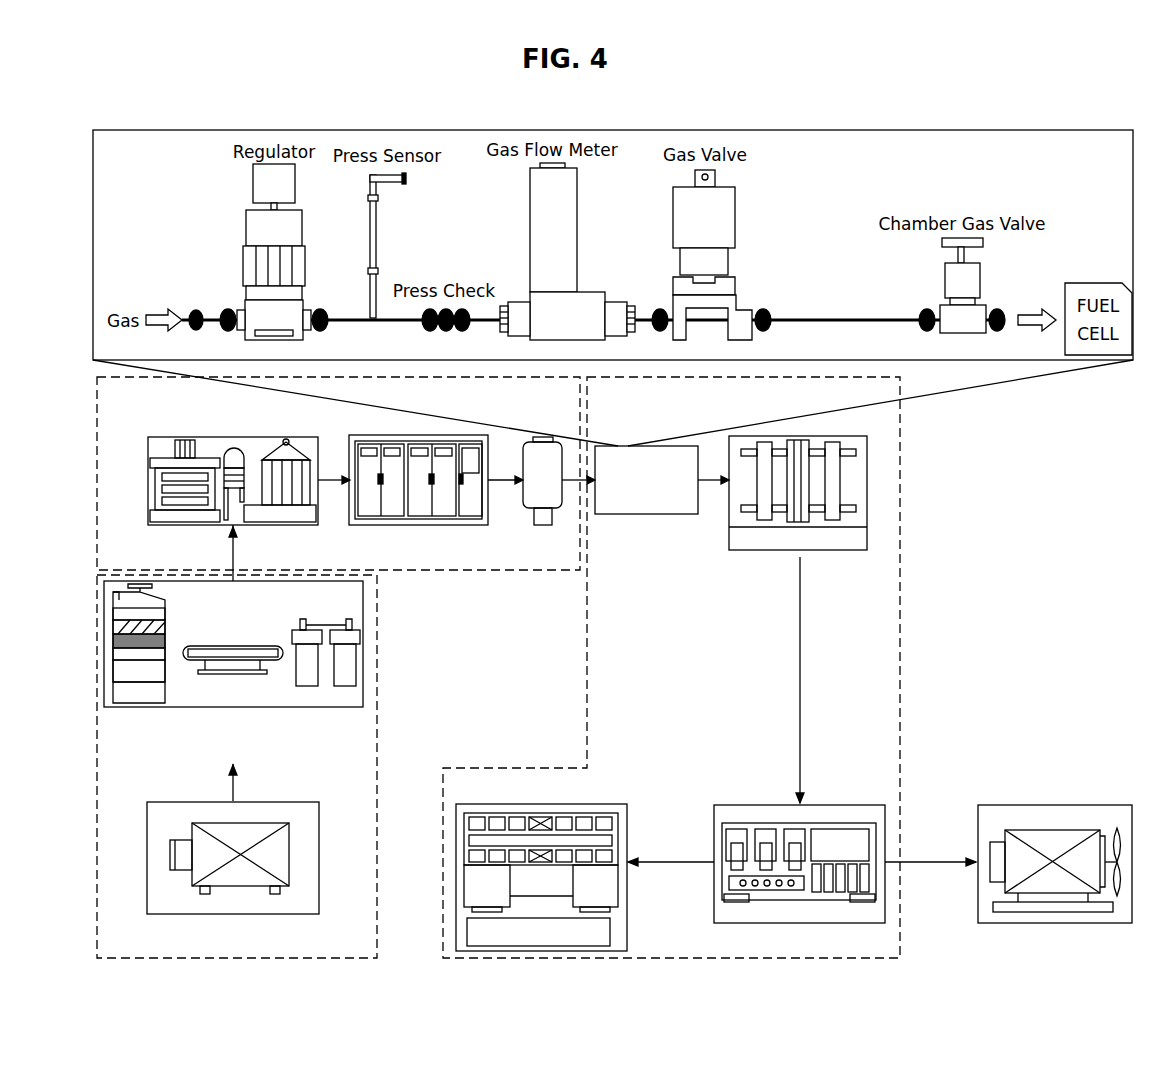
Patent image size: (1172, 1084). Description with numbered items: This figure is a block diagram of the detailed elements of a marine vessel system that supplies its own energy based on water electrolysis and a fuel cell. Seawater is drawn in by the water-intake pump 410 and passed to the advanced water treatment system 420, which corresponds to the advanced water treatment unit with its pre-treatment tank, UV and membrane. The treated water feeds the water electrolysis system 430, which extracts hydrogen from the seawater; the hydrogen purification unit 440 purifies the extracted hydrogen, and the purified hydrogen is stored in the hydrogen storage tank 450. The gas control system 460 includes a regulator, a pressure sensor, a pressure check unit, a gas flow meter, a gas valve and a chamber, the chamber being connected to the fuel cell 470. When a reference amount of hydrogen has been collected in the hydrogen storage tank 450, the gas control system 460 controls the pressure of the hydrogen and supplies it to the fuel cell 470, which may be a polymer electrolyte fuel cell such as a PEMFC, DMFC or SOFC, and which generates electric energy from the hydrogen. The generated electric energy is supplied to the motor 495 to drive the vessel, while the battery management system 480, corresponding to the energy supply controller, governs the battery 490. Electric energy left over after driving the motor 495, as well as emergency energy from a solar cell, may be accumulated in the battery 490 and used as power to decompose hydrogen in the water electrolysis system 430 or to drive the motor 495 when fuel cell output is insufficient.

The water-intake pump 410 is at (147, 858).
The advanced water treatment system 420 is at (363, 645).
The water electrolysis system 430 is at (148, 480).
The hydrogen purification unit 440 is at (413, 525).
The hydrogen storage tank 450 is at (543, 525).
The gas control system 460 is at (645, 514).
The fuel cell 470 is at (867, 480).
The battery management system 480 is at (714, 896).
The battery 490 is at (456, 876).
The motor 495 is at (1003, 805).